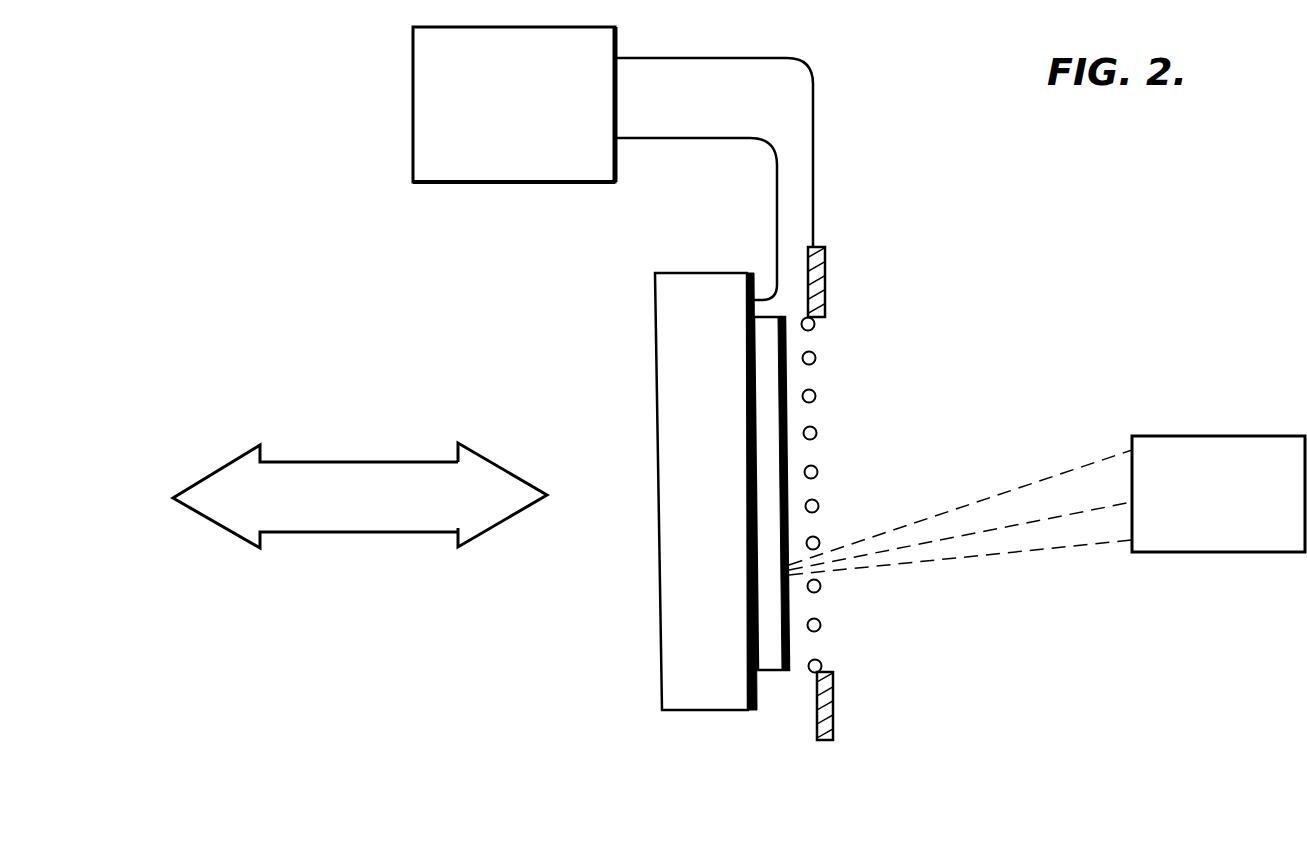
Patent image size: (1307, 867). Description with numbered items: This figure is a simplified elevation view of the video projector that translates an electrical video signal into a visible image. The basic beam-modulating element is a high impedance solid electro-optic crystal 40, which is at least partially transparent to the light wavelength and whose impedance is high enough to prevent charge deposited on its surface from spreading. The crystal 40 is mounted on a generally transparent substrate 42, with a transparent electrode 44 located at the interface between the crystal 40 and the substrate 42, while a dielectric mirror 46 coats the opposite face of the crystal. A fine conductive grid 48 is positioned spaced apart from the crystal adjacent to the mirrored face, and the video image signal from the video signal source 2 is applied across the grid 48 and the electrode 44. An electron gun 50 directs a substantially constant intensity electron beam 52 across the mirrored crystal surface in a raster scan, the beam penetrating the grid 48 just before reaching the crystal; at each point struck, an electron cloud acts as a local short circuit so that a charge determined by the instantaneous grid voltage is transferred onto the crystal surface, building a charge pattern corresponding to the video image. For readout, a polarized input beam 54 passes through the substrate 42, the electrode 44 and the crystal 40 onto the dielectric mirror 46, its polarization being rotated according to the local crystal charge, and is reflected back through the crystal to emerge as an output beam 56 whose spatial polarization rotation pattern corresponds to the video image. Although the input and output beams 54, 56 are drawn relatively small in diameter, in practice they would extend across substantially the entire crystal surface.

The video signal source 2 is at (487, 182).
The electro-optic crystal 40 is at (771, 670).
The substrate 42 is at (670, 273).
The transparent electrode 44 is at (756, 290).
The dielectric mirror 46 is at (790, 644).
The conductive grid 48 is at (816, 358).
The electron gun 50 is at (1232, 436).
The electron beam 52 is at (1003, 492).
The polarized input beam 54 is at (497, 525).
The output beam 56 is at (228, 467).